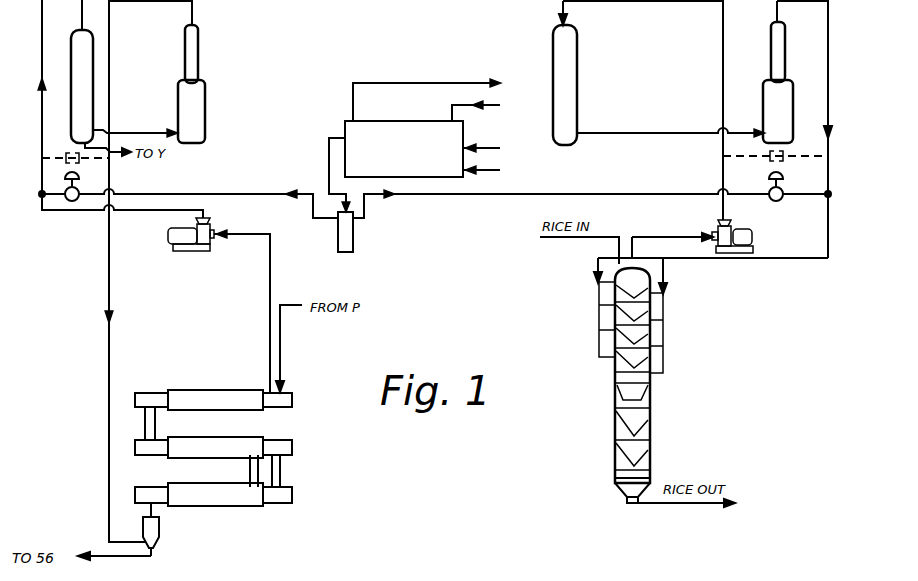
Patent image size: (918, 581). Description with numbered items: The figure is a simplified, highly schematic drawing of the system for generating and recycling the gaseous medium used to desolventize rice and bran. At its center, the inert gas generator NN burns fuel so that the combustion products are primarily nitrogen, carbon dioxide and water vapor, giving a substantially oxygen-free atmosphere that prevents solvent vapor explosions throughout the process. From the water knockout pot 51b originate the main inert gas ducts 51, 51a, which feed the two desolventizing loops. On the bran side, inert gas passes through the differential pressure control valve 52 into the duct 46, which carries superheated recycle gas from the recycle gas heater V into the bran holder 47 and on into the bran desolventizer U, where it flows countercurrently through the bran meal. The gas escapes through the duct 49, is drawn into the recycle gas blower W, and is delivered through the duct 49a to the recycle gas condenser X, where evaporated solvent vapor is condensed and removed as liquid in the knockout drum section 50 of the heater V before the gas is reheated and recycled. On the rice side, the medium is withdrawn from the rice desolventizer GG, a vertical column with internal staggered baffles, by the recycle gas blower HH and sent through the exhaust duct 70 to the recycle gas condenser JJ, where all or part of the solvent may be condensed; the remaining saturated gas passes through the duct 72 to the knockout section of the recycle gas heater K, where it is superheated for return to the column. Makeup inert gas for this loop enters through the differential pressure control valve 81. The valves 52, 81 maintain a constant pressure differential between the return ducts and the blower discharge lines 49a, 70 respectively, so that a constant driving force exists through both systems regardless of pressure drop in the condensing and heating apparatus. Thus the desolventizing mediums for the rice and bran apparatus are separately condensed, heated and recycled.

The duct 46 is at (108, 373).
The bran holder 47 is at (160, 528).
The duct 49 is at (268, 348).
The duct 49a is at (50, 213).
The knockout drum section 50 is at (205, 131).
The main inert gas duct 51 is at (262, 196).
The main inert gas duct 51a is at (460, 196).
The water knockout pot 51b is at (353, 240).
The differential pressure control valve 52 is at (81, 211).
The exhaust duct 70 is at (723, 62).
The duct 72 is at (657, 132).
The differential pressure control valve 81 is at (770, 205).
The recycle gas condenser X is at (80, 66).
The recycle gas heater V is at (193, 52).
The recycle gas blower W is at (163, 255).
The inert gas generator NN is at (420, 159).
The recycle gas condenser JJ is at (565, 72).
The recycle gas heater K is at (780, 50).
The recycle gas blower HH is at (757, 240).
The rice desolventizer GG is at (652, 400).
The bran desolventizer U is at (310, 390).